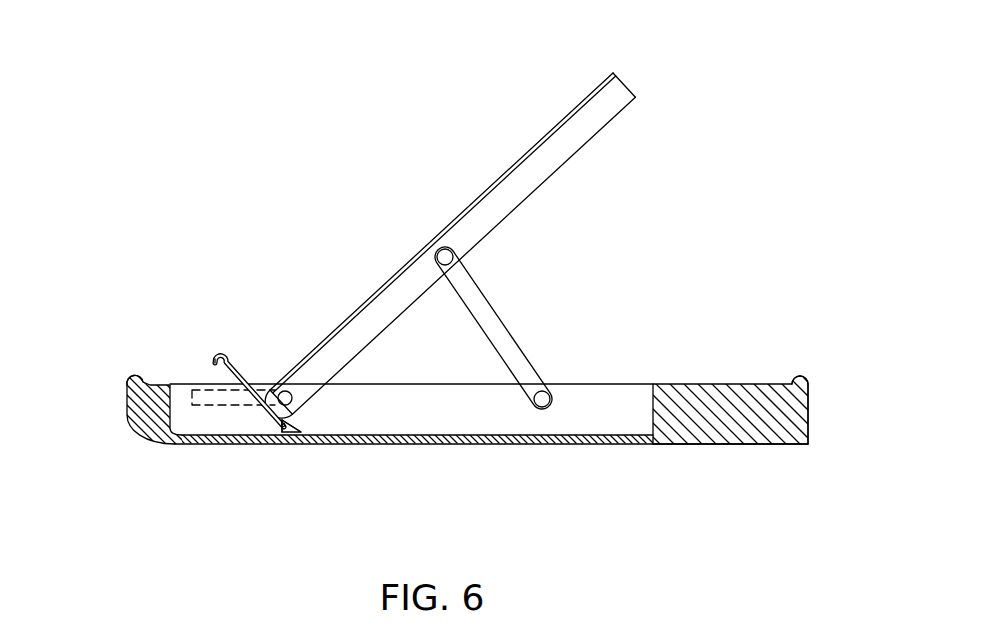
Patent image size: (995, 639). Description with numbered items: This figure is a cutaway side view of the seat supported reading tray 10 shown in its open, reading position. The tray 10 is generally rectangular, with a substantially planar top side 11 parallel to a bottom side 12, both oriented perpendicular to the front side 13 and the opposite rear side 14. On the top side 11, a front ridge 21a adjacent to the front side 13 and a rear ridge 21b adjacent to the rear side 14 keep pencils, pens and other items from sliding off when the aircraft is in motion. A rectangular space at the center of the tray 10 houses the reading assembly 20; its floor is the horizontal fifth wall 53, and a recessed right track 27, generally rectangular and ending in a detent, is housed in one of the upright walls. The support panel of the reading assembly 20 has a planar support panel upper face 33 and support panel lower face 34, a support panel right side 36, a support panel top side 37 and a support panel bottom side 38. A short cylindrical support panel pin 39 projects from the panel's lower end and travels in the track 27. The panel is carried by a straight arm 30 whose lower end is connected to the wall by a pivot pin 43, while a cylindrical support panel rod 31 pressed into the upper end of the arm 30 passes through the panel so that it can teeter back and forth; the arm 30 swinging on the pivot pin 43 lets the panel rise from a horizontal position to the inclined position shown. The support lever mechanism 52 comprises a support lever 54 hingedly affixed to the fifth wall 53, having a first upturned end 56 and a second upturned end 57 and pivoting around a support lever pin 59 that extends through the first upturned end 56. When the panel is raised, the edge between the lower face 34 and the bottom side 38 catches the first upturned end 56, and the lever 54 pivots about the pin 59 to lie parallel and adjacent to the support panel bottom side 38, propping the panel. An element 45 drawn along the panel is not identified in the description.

The seat supported reading tray 10 is at (717, 226).
The top side 11 is at (700, 386).
The bottom side 12 is at (698, 446).
The front side 13 is at (127, 392).
The rear side 14 is at (808, 413).
The reading assembly 20 is at (308, 227).
The front ridge 21a is at (134, 374).
The rear ridge 21b is at (806, 377).
The right track 27 is at (203, 392).
The arm 30 is at (512, 348).
The support panel rod 31 is at (441, 252).
The support panel upper face 33 is at (389, 276).
The support panel lower face 34 is at (523, 208).
The support panel right side 36 is at (486, 218).
The support panel top side 37 is at (636, 96).
The support panel bottom side 38 is at (281, 422).
The support panel pin 39 is at (286, 392).
The pivot pin 43 is at (549, 393).
The arm rail 45 is at (590, 118).
The support lever mechanism 52 is at (237, 344).
The fifth wall 53 is at (603, 435).
The support lever 54 is at (262, 396).
The first upturned end 56 is at (299, 443).
The second upturned end 57 is at (222, 351).
The support lever pin 59 is at (281, 440).